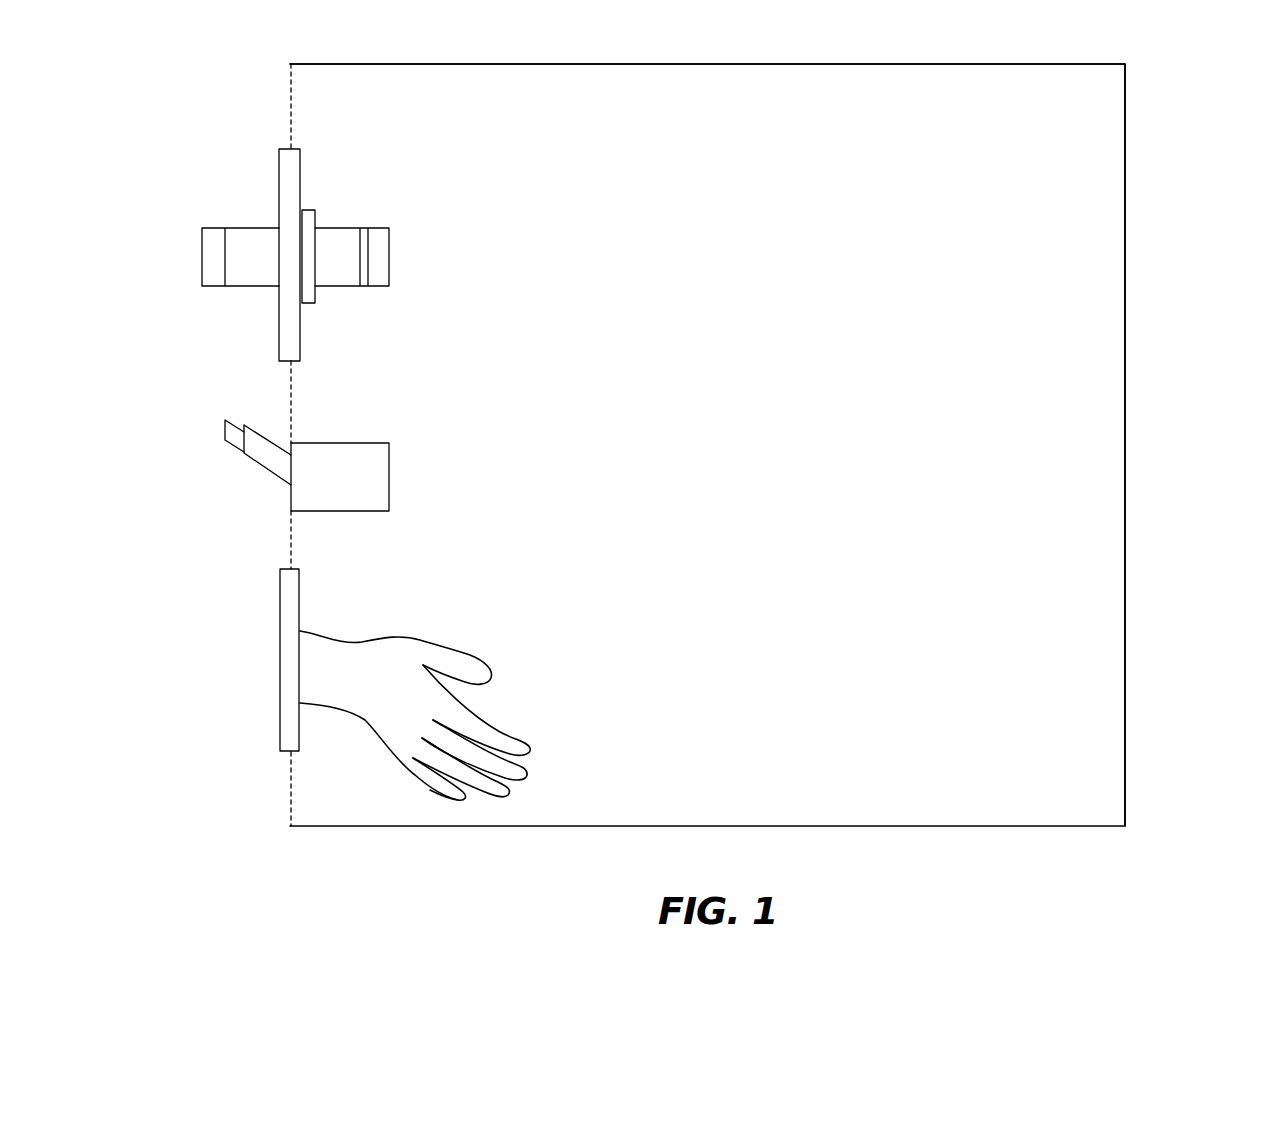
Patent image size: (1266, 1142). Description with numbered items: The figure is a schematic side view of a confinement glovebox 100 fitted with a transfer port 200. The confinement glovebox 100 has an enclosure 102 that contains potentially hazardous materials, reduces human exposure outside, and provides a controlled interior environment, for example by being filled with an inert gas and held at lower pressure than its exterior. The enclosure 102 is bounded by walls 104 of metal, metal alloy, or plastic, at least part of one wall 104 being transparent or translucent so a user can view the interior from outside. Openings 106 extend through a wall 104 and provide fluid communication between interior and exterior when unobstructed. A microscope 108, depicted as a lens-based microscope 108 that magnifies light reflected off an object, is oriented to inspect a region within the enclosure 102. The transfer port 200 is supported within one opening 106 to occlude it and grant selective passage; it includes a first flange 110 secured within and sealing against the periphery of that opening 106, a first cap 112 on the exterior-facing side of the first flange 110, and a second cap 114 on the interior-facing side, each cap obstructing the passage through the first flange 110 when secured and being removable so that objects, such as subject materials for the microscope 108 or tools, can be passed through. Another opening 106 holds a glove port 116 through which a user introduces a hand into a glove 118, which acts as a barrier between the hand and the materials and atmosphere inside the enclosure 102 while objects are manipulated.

The confinement glovebox 100 is at (1164, 166).
The enclosure 102 is at (1125, 475).
The wall 104 is at (292, 107).
The opening 106 is at (294, 363).
The microscope 108 is at (272, 456).
The first flange 110 is at (290, 180).
The first cap 112 is at (245, 270).
The second cap 114 is at (345, 270).
The glove port 116 is at (290, 651).
The glove 118 is at (400, 658).
The transfer port 200 is at (249, 226).